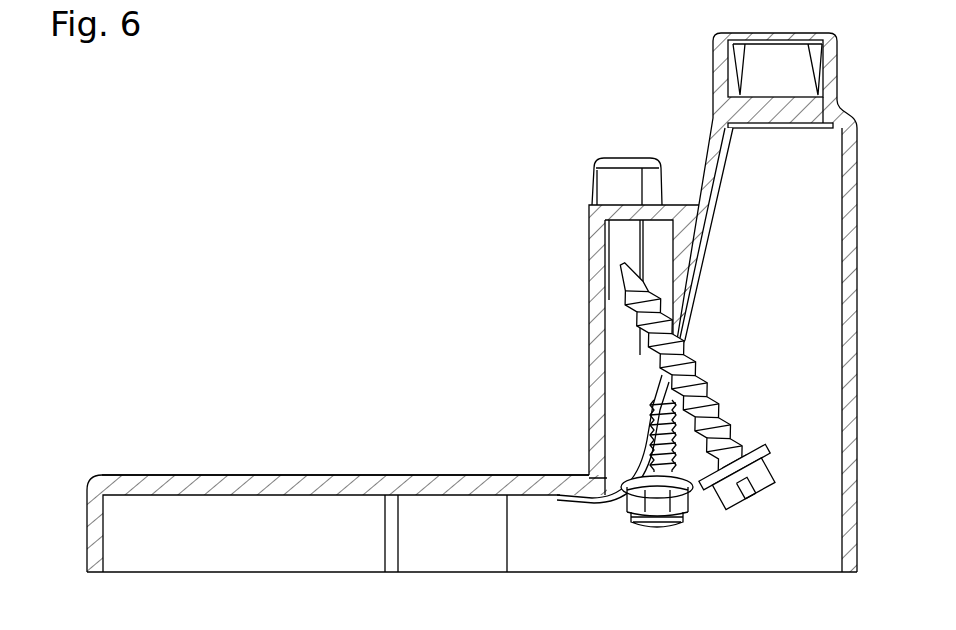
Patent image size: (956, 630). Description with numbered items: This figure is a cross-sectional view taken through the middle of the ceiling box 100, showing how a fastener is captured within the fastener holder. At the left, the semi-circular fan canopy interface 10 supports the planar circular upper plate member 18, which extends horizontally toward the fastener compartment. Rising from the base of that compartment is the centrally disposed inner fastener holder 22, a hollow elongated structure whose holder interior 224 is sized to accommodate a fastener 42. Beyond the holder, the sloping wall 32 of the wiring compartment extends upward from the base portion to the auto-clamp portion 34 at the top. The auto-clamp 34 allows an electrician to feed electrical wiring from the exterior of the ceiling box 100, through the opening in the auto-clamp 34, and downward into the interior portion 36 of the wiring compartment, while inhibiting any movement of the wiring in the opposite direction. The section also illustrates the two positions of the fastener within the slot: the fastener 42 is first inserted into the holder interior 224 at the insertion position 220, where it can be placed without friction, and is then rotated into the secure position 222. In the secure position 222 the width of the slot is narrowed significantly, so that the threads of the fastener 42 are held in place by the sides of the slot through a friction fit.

The semi-circular fan canopy interface 10 is at (87, 527).
The planar circular upper plate member 18 is at (177, 475).
The inner fastener holder 22 is at (592, 185).
The sloping wall 32 is at (708, 134).
The auto-clamp portion 34 is at (786, 34).
The interior portion of the wiring compartment 36 is at (796, 184).
The fastener 42 is at (760, 494).
The ceiling box 100 is at (328, 165).
The insertion position 220 is at (620, 462).
The secure position 222 is at (684, 346).
The holder interior 224 is at (612, 324).